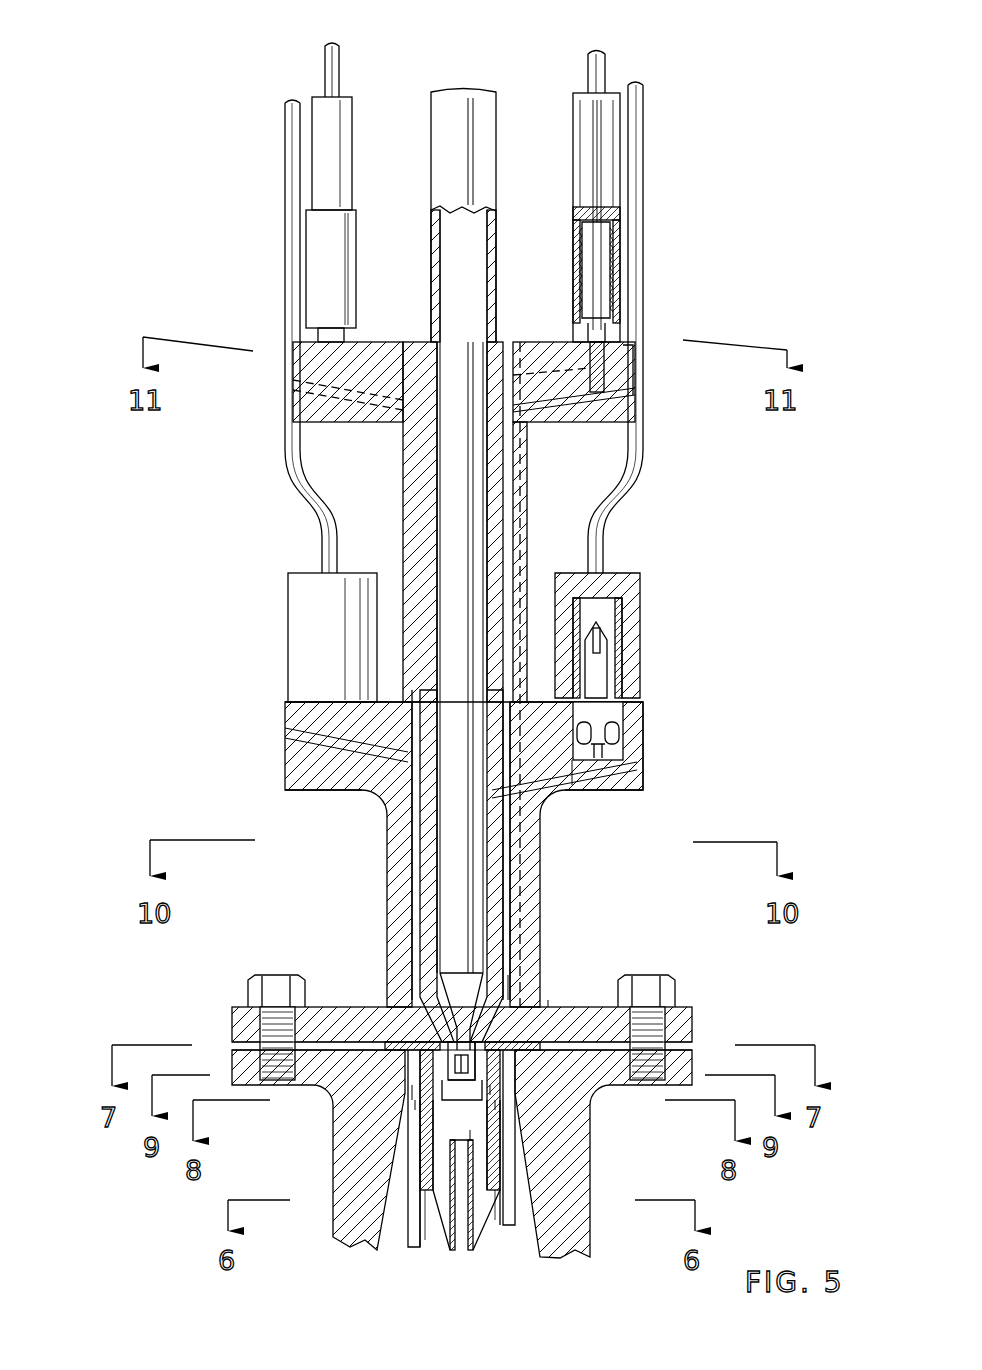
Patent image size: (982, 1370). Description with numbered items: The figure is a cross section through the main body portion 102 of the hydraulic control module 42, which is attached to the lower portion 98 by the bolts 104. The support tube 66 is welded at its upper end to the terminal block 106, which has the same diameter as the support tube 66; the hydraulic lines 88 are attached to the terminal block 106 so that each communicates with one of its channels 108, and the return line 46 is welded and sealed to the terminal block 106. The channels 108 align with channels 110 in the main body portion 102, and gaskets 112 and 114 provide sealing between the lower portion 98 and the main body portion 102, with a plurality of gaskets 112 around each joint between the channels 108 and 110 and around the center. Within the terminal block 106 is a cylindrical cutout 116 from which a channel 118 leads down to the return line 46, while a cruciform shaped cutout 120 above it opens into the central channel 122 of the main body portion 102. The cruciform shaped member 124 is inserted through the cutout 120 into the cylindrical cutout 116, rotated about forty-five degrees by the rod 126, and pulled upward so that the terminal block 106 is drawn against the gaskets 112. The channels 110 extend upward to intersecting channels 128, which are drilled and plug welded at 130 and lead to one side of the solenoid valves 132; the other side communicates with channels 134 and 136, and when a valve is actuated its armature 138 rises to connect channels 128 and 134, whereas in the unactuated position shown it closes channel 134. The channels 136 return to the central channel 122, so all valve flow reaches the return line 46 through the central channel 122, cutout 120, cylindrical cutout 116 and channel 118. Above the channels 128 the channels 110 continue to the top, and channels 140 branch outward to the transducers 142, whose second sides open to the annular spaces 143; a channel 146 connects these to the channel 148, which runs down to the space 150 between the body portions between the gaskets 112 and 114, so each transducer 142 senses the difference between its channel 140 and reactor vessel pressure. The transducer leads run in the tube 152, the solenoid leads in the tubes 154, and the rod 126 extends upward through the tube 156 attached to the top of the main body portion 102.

The hydraulic control module 42 is at (740, 752).
The return line 46 is at (498, 1235).
The support tube 66 is at (416, 1245).
The hydraulic lines 88 is at (468, 1220).
The lower portion 98 is at (355, 1168).
The main body portion 102 is at (300, 348).
The bolts 104 is at (268, 978).
The terminal block 106 is at (410, 1092).
The channels 108 is at (415, 1100).
The channels 110 is at (415, 898).
The gaskets 112 is at (485, 1072).
The gasket 114 is at (392, 1040).
The cylindrical cutout 116 is at (500, 1112).
The channel 118 is at (470, 1135).
The cruciform shaped cutout 120 is at (448, 1068).
The central channel 122 is at (508, 975).
The cruciform shaped member 124 is at (492, 1087).
The rod 126 is at (467, 860).
The intersectioning channels 128 is at (310, 752).
The plug welds 130 is at (418, 345).
The solenoid valves 132 is at (298, 598).
The channels 134 is at (645, 755).
The channels 136 is at (572, 760).
The armature 138 is at (612, 650).
The channels 140 is at (615, 392).
The transducers 142 is at (345, 252).
The annular spaces 143 is at (633, 345).
The channel 146 is at (576, 332).
The channel 148 is at (522, 468).
The space 150 is at (548, 1000).
The tube 152 is at (333, 52).
The tubes 154 is at (290, 152).
The tube 156 is at (482, 118).